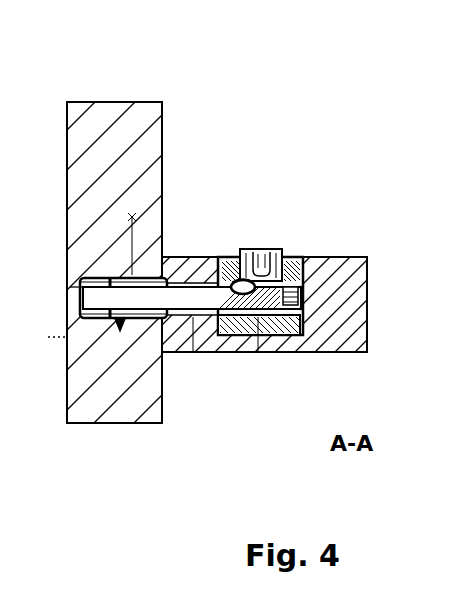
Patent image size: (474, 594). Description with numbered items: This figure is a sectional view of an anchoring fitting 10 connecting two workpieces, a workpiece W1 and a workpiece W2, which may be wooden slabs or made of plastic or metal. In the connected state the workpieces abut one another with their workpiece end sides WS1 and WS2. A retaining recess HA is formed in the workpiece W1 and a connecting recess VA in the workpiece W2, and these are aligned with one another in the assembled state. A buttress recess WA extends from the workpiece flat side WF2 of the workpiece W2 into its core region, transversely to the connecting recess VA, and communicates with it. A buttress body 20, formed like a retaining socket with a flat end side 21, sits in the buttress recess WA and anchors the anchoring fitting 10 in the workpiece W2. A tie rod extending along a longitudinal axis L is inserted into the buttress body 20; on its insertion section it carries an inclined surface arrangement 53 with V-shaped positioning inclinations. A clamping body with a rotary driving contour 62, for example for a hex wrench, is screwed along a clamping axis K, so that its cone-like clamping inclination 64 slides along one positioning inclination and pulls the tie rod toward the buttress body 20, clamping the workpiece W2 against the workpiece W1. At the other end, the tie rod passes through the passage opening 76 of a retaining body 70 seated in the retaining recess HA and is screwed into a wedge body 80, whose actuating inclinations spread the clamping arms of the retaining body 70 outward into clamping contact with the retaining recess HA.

The workpiece W1 is at (64, 98).
The workpiece W2 is at (361, 250).
The workpiece end side WS1 is at (162, 153).
The workpiece end side WS2 is at (157, 343).
The workpiece flat side WF2 is at (322, 252).
The anchoring fitting 10 is at (148, 258).
The buttress body 20 is at (283, 353).
The end side 21 is at (193, 317).
The inclined surface arrangement 53 is at (221, 260).
The rotary driving contour 62 is at (270, 250).
The clamping inclination 64 is at (288, 343).
The retaining body 70 is at (115, 322).
The passage opening 76 is at (113, 280).
The wedge body 80 is at (85, 278).
The retaining recess HA is at (125, 230).
The clamping axis K is at (259, 246).
The longitudinal axis L is at (75, 333).
The connecting recess VA is at (191, 377).
The buttress recess WA is at (258, 352).